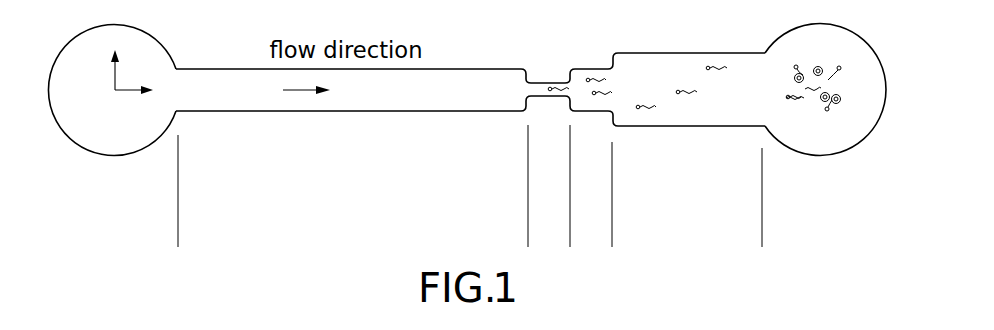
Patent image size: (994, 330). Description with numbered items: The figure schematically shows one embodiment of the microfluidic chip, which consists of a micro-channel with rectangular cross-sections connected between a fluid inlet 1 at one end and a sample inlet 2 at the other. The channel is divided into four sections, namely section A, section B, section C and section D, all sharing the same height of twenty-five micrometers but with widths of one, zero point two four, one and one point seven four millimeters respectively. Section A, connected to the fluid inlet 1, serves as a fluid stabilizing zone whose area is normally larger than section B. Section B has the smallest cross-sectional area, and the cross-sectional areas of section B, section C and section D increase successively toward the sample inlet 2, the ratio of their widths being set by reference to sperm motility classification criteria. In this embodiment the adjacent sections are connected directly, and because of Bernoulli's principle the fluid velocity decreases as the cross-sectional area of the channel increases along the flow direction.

The fluid inlet 1 is at (106, 135).
The sample inlet 2 is at (812, 141).
The section A is at (178, 239).
The section B is at (494, 189).
The section C is at (535, 239).
The section D is at (612, 239).